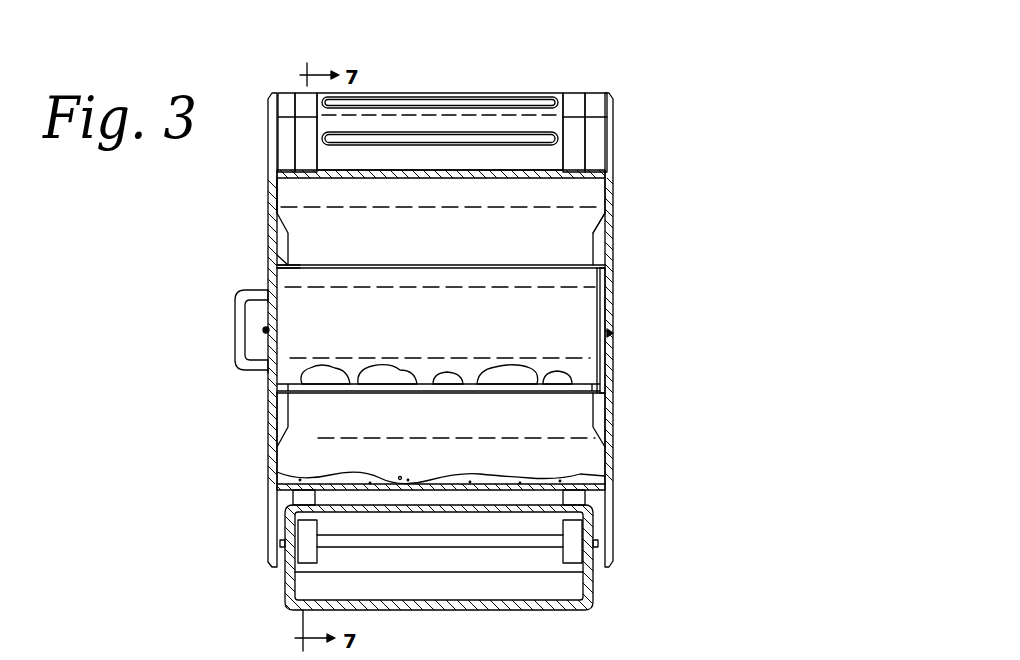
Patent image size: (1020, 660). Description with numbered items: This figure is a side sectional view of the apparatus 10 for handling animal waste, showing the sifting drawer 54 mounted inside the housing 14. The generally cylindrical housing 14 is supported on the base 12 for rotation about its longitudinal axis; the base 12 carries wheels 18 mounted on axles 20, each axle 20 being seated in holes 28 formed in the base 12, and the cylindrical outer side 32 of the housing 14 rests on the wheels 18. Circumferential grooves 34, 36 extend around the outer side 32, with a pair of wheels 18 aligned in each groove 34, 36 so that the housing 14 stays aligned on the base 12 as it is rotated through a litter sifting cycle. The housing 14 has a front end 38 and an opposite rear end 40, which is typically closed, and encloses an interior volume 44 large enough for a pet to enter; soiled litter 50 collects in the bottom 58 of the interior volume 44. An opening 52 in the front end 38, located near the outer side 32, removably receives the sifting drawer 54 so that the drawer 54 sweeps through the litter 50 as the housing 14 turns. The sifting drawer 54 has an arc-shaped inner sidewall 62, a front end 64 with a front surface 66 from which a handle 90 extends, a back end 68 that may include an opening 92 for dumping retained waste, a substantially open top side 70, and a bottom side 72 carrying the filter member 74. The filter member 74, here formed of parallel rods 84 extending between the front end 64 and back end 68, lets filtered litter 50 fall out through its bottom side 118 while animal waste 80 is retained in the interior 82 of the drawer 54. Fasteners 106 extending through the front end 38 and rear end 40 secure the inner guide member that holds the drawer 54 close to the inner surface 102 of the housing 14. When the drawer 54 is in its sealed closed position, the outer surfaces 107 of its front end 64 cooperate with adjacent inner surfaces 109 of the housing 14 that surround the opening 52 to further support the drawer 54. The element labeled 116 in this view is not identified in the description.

The apparatus 10 is at (640, 46).
The base 12 is at (595, 593).
The housing 14 is at (597, 136).
The wheels 18 is at (573, 548).
The axles 20 is at (423, 550).
The holes 28 is at (283, 547).
The outer side 32 is at (550, 95).
The groove 34 is at (302, 110).
The groove 36 is at (575, 98).
The front end 38 is at (268, 205).
The rear end 40 is at (608, 240).
The interior volume 44 is at (300, 427).
The litter 50 is at (587, 483).
The opening 52 is at (270, 265).
The sifting drawer 54 is at (270, 270).
The bottom 58 is at (280, 478).
The inner sidewall 62 is at (345, 300).
The front end 64 is at (268, 373).
The front surface 66 is at (268, 302).
The back end 68 is at (600, 305).
The top side 70 is at (440, 267).
The bottom side 72 is at (608, 418).
The filter member 74 is at (443, 402).
The animal waste 80 is at (547, 370).
The interior 82 is at (603, 218).
The rods 84 is at (600, 378).
The handle 90 is at (266, 323).
The opening 92 is at (608, 285).
The inner surface 102 is at (585, 182).
The fasteners 106 is at (267, 330).
The outer surfaces 107 is at (270, 260).
The inner surfaces 109 is at (268, 405).
The slot 116 is at (437, 105).
The bottom side 118 is at (540, 395).